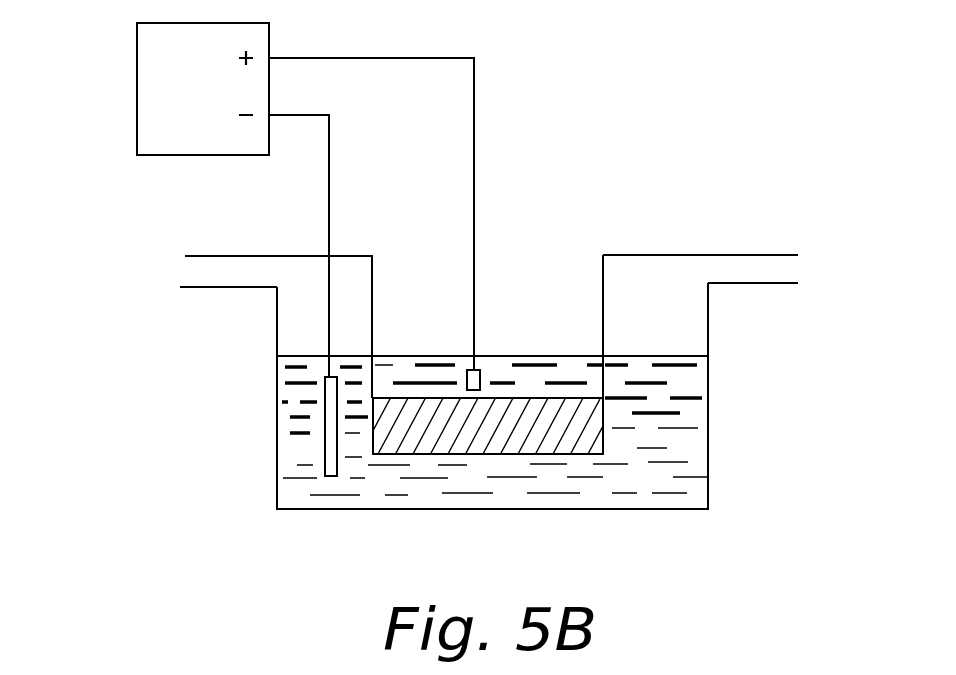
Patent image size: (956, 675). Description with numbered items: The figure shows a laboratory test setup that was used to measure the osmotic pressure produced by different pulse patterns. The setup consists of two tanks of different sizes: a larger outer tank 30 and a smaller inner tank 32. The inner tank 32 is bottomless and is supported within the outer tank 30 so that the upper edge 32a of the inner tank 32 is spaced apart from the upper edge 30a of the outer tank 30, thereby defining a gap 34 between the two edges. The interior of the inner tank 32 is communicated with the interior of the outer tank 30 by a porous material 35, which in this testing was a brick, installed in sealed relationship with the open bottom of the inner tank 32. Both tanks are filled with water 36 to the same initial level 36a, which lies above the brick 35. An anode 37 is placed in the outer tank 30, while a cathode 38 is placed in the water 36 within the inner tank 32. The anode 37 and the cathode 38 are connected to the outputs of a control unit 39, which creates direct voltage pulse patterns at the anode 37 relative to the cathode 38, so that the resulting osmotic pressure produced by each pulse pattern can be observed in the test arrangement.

The outer tank 30 is at (708, 460).
The upper edge of the outer tank 30a is at (740, 285).
The inner tank 32 is at (604, 313).
The upper edge of the inner tank 32a is at (753, 255).
The gap 34 is at (778, 268).
The porous material 35 is at (587, 433).
The water 36 is at (683, 387).
The initial level 36a is at (307, 356).
The anode 37 is at (323, 450).
The cathode 38 is at (468, 380).
The control unit 39 is at (137, 99).